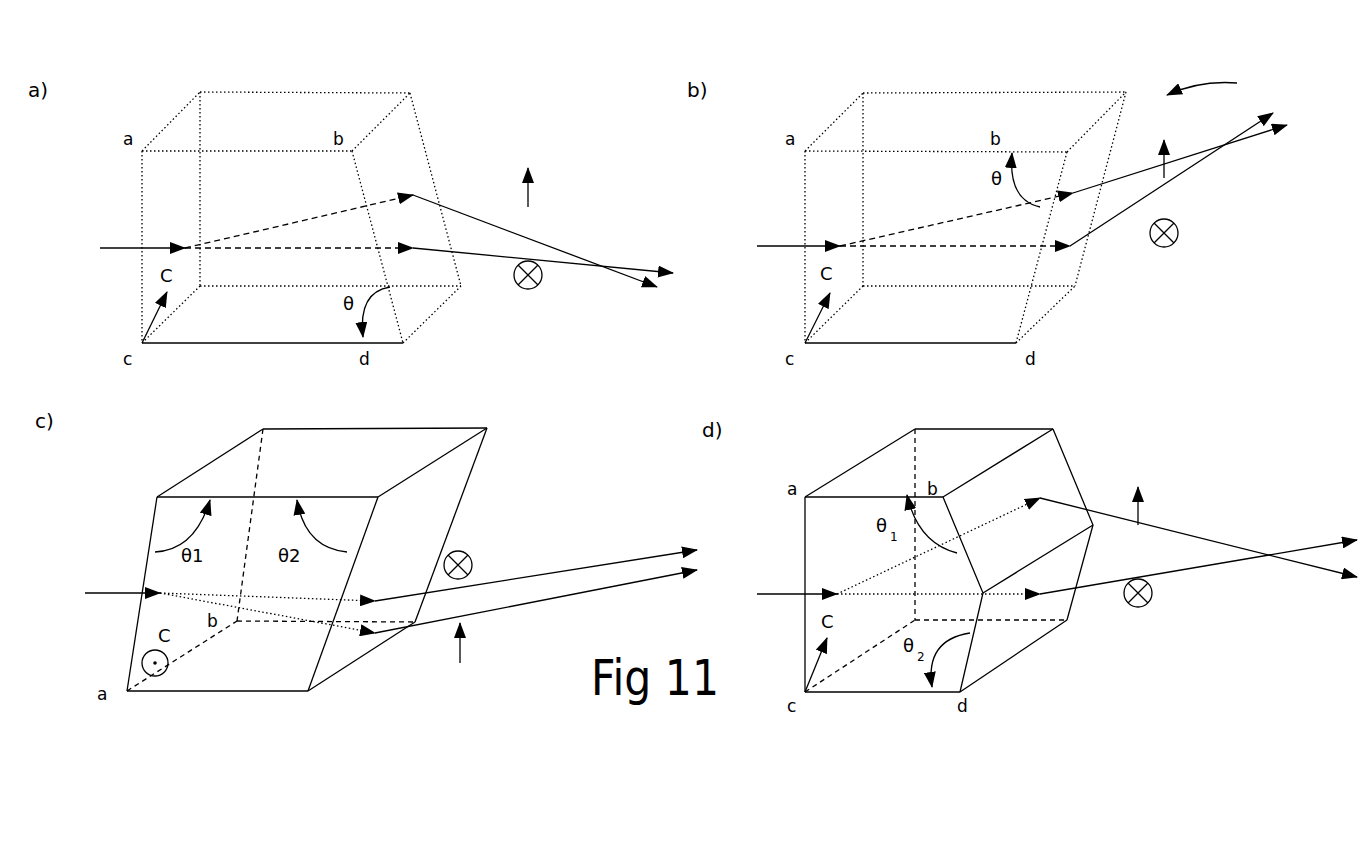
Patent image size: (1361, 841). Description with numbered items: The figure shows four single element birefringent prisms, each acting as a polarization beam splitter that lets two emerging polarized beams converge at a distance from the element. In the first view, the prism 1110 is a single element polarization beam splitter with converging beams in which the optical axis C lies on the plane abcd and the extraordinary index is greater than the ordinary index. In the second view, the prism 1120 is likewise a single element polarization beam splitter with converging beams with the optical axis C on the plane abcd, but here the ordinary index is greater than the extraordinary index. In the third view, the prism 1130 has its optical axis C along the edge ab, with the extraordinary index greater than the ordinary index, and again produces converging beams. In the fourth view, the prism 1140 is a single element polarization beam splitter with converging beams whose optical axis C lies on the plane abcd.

The prism 1110 is at (257, 70).
The prism 1120 is at (915, 68).
The prism 1130 is at (270, 429).
The prism 1140 is at (950, 423).